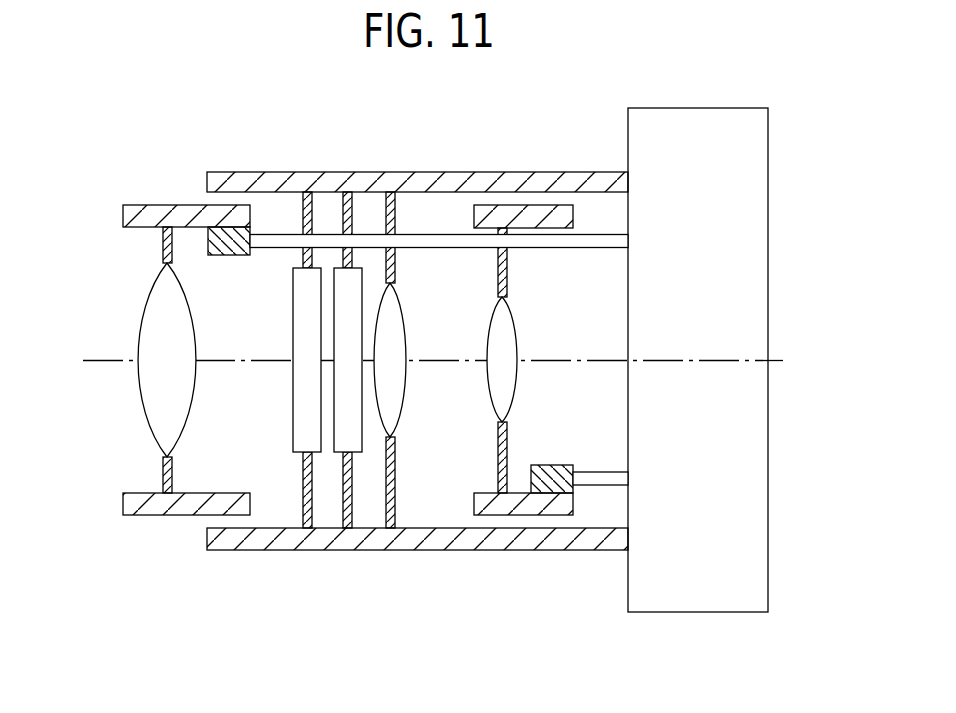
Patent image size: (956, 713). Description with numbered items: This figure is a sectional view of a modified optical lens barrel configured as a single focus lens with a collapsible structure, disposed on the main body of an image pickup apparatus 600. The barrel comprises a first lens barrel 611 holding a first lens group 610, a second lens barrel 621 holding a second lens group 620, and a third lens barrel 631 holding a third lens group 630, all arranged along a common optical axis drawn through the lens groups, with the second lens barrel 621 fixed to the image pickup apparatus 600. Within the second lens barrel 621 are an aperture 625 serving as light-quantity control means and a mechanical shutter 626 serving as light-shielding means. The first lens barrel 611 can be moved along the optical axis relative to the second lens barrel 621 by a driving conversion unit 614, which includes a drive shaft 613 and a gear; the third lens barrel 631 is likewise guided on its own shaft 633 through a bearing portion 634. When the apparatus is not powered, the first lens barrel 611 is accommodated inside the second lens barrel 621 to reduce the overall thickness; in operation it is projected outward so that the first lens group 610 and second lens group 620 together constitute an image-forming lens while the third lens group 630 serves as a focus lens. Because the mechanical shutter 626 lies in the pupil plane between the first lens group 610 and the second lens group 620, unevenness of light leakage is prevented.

The image pickup apparatus 600 is at (673, 602).
The first lens group 610 is at (146, 404).
The first lens barrel 611 is at (148, 212).
The drive shaft 613 is at (270, 243).
The driving conversion unit 614 is at (215, 250).
The second lens group 620 is at (402, 390).
The second lens barrel 621 is at (362, 172).
The aperture 625 is at (295, 419).
The mechanical shutter 626 is at (360, 440).
The third lens group 630 is at (513, 390).
The third lens barrel 631 is at (557, 222).
The guide shaft 633 is at (598, 477).
The bearing portion 634 is at (540, 467).